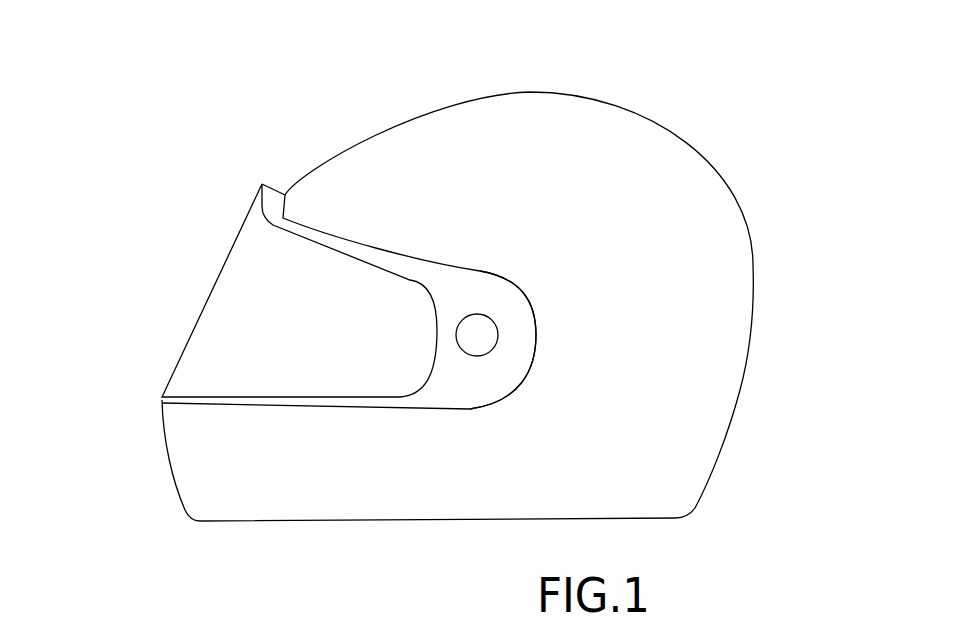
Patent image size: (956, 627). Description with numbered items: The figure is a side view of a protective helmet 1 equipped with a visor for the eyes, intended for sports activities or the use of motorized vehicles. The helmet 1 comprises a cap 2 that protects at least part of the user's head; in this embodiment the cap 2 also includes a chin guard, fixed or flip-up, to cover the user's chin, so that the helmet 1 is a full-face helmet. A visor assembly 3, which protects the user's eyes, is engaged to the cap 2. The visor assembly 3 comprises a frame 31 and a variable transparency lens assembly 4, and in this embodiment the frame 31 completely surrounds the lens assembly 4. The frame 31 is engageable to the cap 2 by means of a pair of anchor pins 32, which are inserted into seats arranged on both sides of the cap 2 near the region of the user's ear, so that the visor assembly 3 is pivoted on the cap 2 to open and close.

The protective helmet 1 is at (768, 135).
The cap 2 is at (423, 153).
The visor assembly 3 is at (138, 282).
The variable transparency lens assembly 4 is at (220, 340).
The frame 31 is at (508, 303).
The anchor pin 32 is at (478, 337).